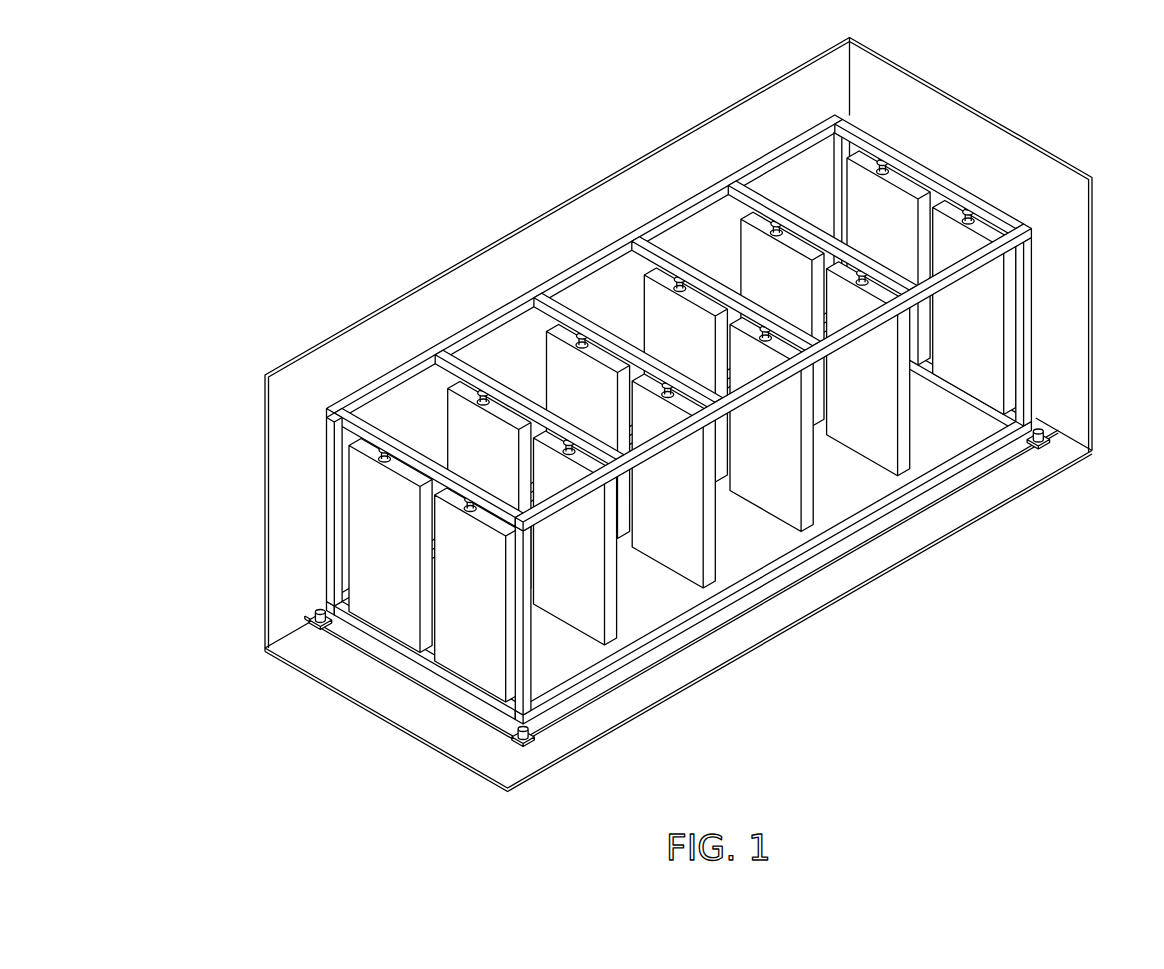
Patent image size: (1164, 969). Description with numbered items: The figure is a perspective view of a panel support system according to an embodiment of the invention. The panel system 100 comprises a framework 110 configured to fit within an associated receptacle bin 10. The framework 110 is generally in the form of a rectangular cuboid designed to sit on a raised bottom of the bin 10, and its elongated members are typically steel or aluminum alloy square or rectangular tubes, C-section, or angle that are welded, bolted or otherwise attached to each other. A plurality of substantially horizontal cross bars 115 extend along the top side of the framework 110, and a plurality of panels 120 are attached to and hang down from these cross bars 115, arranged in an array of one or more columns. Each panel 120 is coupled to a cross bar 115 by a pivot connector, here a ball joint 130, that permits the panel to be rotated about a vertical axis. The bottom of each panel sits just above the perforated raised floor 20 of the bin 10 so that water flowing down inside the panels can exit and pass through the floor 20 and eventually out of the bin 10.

The receptacle bin 10 is at (1046, 151).
The perforated raised floor 20 is at (797, 583).
The panel system 100 is at (591, 382).
The framework 110 is at (563, 268).
The cross bars 115 is at (664, 232).
The panels 120 is at (462, 419).
The ball joint 130 is at (390, 460).